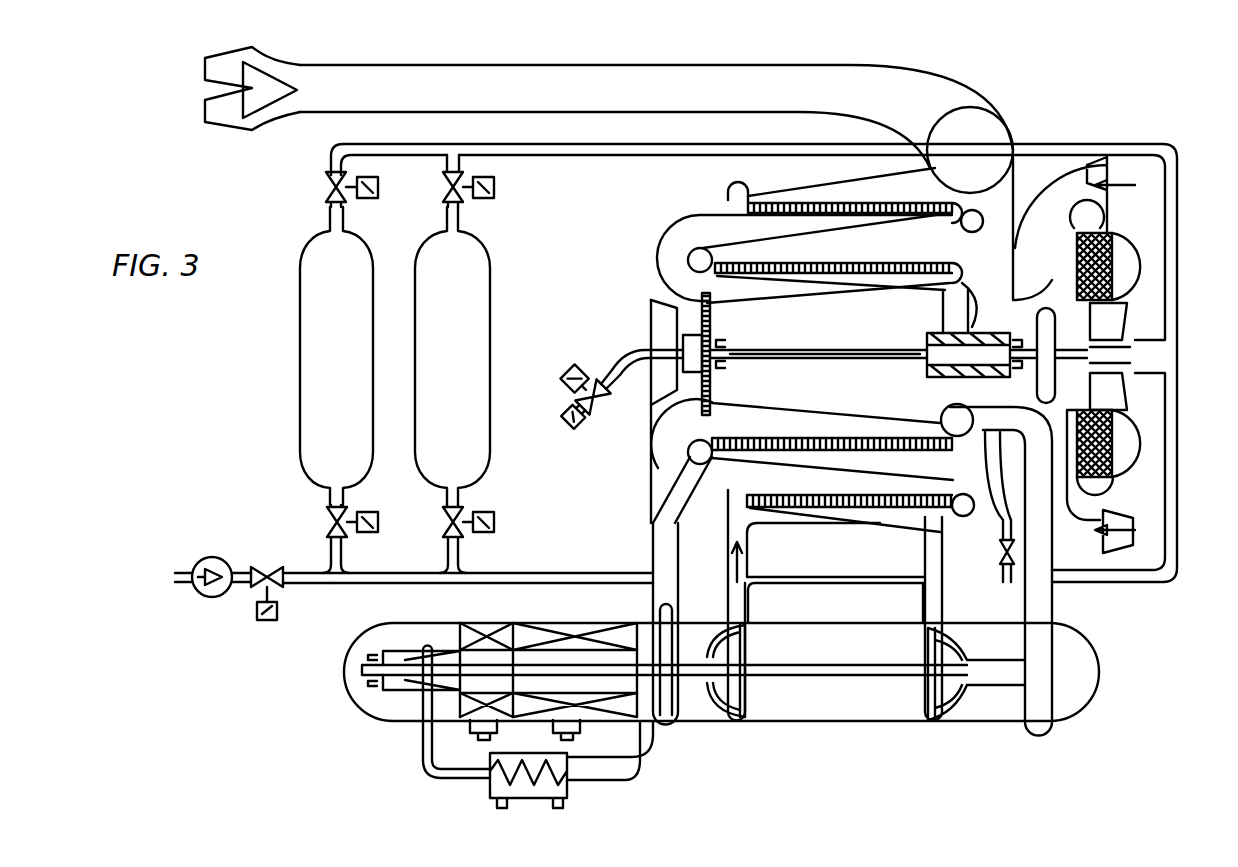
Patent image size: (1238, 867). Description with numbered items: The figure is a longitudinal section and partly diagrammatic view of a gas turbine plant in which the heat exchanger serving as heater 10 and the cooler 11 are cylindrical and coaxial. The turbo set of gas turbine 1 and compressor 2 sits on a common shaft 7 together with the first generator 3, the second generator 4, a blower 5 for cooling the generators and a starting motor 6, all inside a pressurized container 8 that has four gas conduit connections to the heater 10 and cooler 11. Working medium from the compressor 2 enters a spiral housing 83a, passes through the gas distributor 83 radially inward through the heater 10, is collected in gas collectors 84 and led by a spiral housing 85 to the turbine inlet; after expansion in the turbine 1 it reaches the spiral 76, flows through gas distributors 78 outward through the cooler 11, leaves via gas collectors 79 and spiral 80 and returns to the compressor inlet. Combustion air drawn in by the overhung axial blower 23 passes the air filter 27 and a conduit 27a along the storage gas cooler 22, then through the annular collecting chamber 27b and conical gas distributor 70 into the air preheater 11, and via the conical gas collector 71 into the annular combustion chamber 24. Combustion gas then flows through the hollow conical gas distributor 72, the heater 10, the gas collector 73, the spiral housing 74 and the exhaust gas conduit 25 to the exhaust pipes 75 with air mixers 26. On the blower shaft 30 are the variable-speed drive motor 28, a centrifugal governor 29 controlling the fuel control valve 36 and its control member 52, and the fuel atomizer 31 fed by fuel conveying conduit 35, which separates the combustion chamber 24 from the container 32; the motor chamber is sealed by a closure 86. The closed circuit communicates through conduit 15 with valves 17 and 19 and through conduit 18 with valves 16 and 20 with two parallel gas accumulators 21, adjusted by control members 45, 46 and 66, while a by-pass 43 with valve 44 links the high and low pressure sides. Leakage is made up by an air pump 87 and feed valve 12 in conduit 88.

The gas turbine 1 is at (955, 686).
The compressor 2 is at (722, 700).
The first generator 3 is at (502, 686).
The second generator 4 is at (468, 708).
The blower 5 is at (440, 682).
The starting motor 6 is at (413, 656).
The common shaft 7 is at (855, 665).
The container 8 is at (721, 672).
The heater 10 is at (847, 246).
The cooler 11 is at (800, 276).
The feed valve 12 is at (257, 570).
The conduit 15 is at (578, 148).
The valve 16 is at (443, 522).
The valve 17 is at (443, 187).
The conduit 18 is at (542, 573).
The valve 19 is at (326, 187).
The valve 20 is at (327, 522).
The gas accumulator 21 is at (415, 358).
The storage gas cooler 22 is at (1110, 356).
The axial blower 23 is at (1045, 380).
The combustion chamber 24 is at (803, 258).
The exhaust gas conduit 25 is at (950, 100).
The air mixer 26 is at (262, 122).
The air filter 27 is at (1100, 235).
The conduit 27a is at (1130, 282).
The annular collecting chamber 27b is at (983, 291).
The drive motor 28 is at (940, 377).
The centrifugal governor 29 is at (683, 340).
The shaft 30 is at (855, 350).
The fuel atomizer 31 is at (710, 384).
The container 32 is at (835, 350).
The fuel conveying conduit 35 is at (634, 350).
The fuel control valve 36 is at (596, 412).
The by-pass 43 is at (864, 583).
The valve 44 is at (1000, 552).
The control member 45 is at (378, 198).
The control member 46 is at (378, 532).
The control member 52 is at (568, 368).
The control member 66 is at (494, 198).
The conical gas distributor 70 is at (946, 262).
The conical gas collector 71 is at (742, 300).
The gas distributor 72 is at (788, 200).
The gas collector 73 is at (902, 182).
The spiral housing 74 is at (972, 212).
The exhaust pipe 75 is at (305, 112).
The spiral 76 is at (943, 305).
The gas distributor 78 is at (915, 290).
The gas collector 79 is at (735, 255).
The spiral 80 is at (698, 250).
The gas distributor 83 is at (772, 523).
The spiral housing 83a is at (732, 185).
The gas collector 84 is at (968, 494).
The spiral housing 85 is at (960, 210).
The closure 86 is at (660, 390).
The air pump 87 is at (220, 558).
The conduit 88 is at (320, 583).